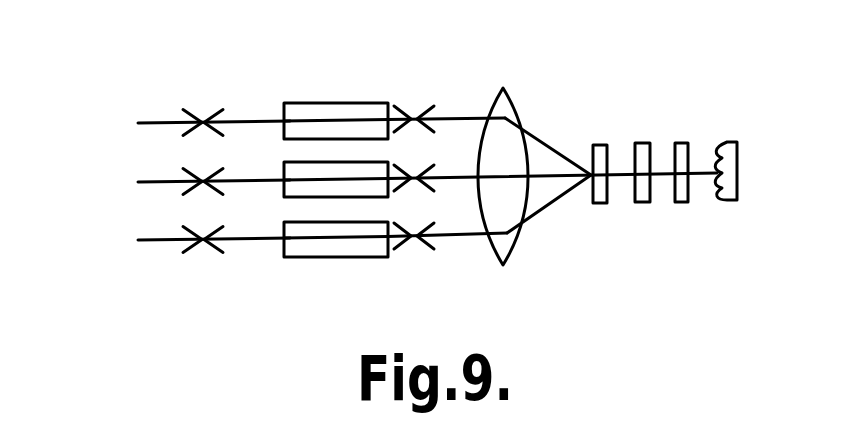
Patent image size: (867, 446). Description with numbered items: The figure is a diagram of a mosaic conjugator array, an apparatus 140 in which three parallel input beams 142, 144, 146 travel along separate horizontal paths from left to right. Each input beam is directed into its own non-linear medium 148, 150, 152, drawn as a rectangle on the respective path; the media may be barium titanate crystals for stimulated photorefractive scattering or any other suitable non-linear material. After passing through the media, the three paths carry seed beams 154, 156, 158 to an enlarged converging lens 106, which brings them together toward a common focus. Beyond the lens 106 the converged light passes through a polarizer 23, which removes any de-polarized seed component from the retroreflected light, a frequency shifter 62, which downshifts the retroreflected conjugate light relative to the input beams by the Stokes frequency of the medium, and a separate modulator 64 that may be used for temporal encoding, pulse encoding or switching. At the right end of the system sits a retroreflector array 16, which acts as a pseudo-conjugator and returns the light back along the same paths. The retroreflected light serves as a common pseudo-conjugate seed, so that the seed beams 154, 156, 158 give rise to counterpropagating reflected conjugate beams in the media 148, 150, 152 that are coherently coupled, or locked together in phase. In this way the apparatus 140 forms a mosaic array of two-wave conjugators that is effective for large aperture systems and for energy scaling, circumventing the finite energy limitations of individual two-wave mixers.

The apparatus 140 is at (411, 40).
The input beam 142 is at (150, 122).
The input beam 144 is at (150, 182).
The input beam 146 is at (157, 240).
The non-linear medium 148 is at (320, 103).
The non-linear medium 150 is at (284, 165).
The non-linear medium 152 is at (320, 257).
The seed beam 154 is at (455, 118).
The seed beam 156 is at (461, 177).
The seed beam 158 is at (458, 236).
The converging lens 106 is at (512, 105).
The polarizer 23 is at (600, 203).
The frequency shifter 62 is at (642, 143).
The modulator 64 is at (682, 202).
The retroreflector array 16 is at (730, 142).